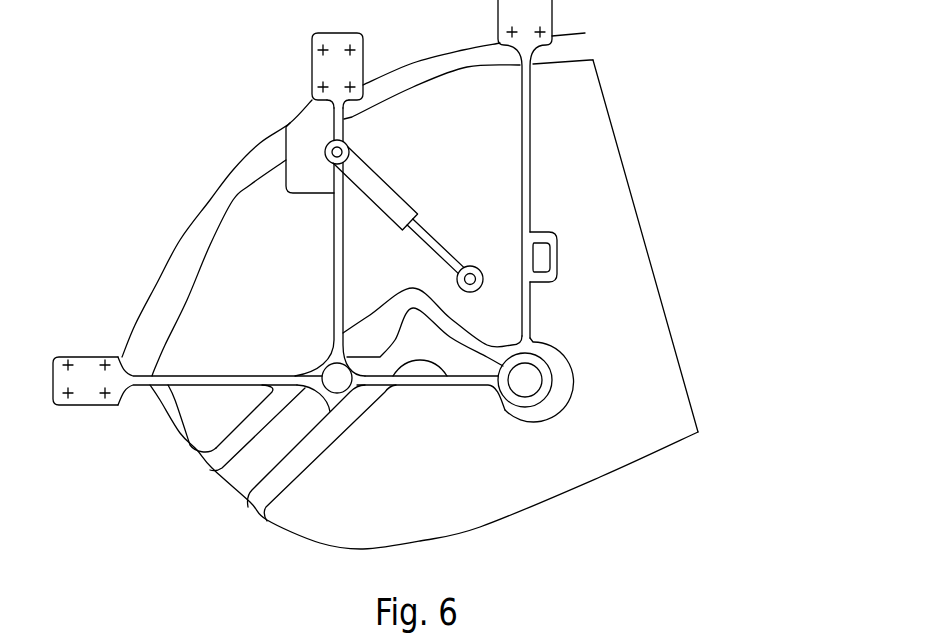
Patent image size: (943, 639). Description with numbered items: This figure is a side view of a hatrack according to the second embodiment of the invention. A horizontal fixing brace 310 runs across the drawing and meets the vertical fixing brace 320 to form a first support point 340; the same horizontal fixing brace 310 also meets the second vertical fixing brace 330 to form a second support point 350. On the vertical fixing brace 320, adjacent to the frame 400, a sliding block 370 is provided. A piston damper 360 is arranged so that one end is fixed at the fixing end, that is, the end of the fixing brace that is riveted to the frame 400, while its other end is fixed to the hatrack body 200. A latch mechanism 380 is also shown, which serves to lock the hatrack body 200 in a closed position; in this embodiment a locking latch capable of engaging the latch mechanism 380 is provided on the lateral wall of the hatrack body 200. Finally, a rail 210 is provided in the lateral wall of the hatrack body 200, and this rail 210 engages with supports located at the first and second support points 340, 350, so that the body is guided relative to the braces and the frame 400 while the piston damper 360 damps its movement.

The hatrack body 200 is at (620, 438).
The rail 210 is at (272, 447).
The horizontal fixing brace 310 is at (175, 390).
The vertical fixing brace 320 is at (333, 186).
The vertical fixing brace 330 is at (528, 136).
The first support point 340 is at (336, 385).
The second support point 350 is at (525, 383).
The piston damper 360 is at (399, 207).
The sliding block 370 is at (303, 143).
The latch mechanism 380 is at (543, 258).
The frame 400 is at (158, 296).